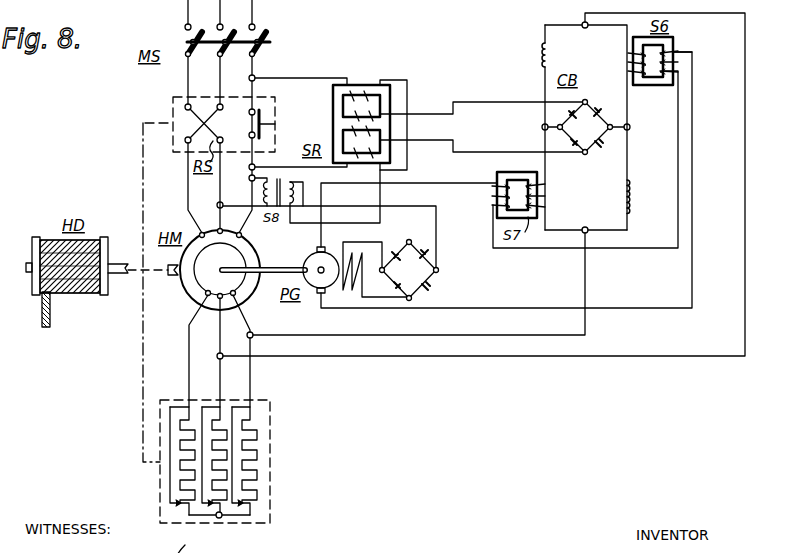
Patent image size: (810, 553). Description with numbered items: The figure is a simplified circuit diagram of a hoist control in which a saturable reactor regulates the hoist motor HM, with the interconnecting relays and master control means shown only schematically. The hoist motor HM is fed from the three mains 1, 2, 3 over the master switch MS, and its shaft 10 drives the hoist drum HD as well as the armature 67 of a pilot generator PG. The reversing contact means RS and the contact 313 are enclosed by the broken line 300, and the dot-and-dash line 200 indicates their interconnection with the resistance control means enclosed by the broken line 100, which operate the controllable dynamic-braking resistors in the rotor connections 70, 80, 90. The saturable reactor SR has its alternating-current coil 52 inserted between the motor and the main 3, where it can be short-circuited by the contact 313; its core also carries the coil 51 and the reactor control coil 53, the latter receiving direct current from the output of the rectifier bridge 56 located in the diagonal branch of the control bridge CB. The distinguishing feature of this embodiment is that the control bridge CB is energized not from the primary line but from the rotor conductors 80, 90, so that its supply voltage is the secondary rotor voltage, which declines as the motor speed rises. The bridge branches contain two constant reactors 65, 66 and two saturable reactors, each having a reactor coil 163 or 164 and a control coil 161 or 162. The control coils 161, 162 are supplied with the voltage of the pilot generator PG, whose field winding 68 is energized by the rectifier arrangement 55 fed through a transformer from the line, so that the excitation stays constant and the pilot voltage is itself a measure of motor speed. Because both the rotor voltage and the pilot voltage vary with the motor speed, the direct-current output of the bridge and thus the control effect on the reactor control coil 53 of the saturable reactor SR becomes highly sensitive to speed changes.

The main 1 is at (191, 12).
The main 2 is at (223, 12).
The main 3 is at (255, 12).
The broken line enclosing contact means 300 is at (175, 97).
The contact 313 is at (255, 124).
The dot-and-dash line 200 is at (143, 192).
The broken line enclosing resistance control means 100 is at (160, 485).
The three-phase rotor connection 70 is at (185, 420).
The rotor circuit conductor 80 is at (217, 420).
The rotor circuit conductor 90 is at (247, 420).
The shaft 10 is at (265, 262).
The armature 67 is at (380, 262).
The field winding 68 is at (376, 269).
The rectifier arrangement 55 is at (440, 272).
The coil 51 is at (342, 100).
The alternating-current coil 52 is at (352, 100).
The reactor control coil 53 is at (342, 126).
The reactor 65 is at (549, 62).
The rectifier bridge 56 is at (603, 113).
The reactor 66 is at (623, 203).
The reactor coil 163 is at (628, 62).
The control coil 161 is at (684, 64).
The control coil 162 is at (492, 196).
The reactor coil 164 is at (545, 197).